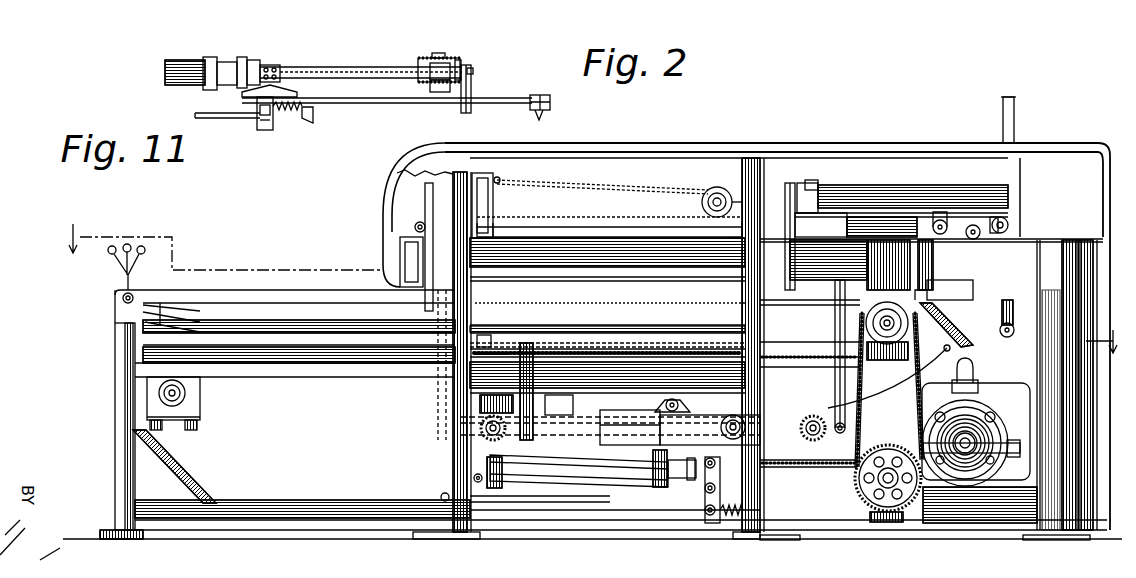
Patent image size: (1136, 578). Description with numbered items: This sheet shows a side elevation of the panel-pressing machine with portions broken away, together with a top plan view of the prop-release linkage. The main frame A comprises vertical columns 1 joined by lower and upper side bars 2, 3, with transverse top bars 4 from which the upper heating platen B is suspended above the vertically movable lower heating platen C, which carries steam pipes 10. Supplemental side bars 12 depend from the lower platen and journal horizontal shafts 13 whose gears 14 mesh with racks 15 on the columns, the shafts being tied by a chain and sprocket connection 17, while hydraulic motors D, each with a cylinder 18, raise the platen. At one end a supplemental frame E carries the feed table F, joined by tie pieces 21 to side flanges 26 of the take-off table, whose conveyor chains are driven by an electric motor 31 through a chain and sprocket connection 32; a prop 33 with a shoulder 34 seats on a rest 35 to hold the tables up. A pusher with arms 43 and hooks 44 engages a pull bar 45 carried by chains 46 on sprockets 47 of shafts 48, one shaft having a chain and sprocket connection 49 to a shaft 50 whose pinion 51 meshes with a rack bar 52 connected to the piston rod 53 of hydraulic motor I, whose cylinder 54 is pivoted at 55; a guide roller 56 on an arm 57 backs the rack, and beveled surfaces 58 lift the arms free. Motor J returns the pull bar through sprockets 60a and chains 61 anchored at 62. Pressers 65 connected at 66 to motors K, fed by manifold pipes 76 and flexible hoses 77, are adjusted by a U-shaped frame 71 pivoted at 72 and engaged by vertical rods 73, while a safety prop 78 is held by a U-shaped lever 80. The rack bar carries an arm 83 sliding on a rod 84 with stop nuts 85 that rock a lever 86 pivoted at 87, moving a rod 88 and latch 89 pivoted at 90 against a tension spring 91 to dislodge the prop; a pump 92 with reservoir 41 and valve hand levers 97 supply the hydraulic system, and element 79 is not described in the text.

In FIG. 2, the vertical side posts or columns 1 is at (445, 540).
In FIG. 11, the lower side bars 2 is at (255, 100).
In FIG. 2, the lower side bars 2 is at (955, 530).
In FIG. 2, the upper side bars 3 is at (589, 288).
In FIG. 2, the transverse top bars 4 is at (473, 192).
In FIG. 2, the steam pipes 10 is at (590, 350).
In FIG. 2, the supplemental side bars 12 is at (600, 430).
In FIG. 2, the horizontal shafts 13 is at (490, 440).
In FIG. 2, the gears 14 is at (480, 436).
In FIG. 2, the racks 15 is at (480, 410).
In FIG. 2, the chain and sprocket connection 17 is at (630, 440).
In FIG. 2, the cylinder 18 is at (555, 450).
In FIG. 2, the tie pieces 21 is at (200, 335).
In FIG. 2, the side flanges 26 is at (285, 362).
In FIG. 2, the electric motor 31 is at (195, 395).
In FIG. 2, the chain and sprocket connection 32 is at (145, 380).
In FIG. 2, the prop 33 is at (478, 478).
In FIG. 2, the shoulder 34 is at (480, 420).
In FIG. 2, the rest 35 is at (470, 428).
In FIG. 2, the reservoir 41 is at (982, 380).
In FIG. 2, the arms 43 is at (360, 326).
In FIG. 2, the hooks 44 is at (500, 322).
In FIG. 2, the pull bar 45 is at (485, 325).
In FIG. 2, the chains 46 is at (640, 350).
In FIG. 2, the sprockets 47 is at (958, 347).
In FIG. 2, the shafts 48 is at (952, 318).
In FIG. 2, the chain and sprocket connection 49 is at (920, 400).
In FIG. 11, the shaft 50 is at (440, 84).
In FIG. 2, the shaft 50 is at (888, 488).
In FIG. 11, the pinion 51 is at (430, 55).
In FIG. 11, the rack bar 52 is at (396, 66).
In FIG. 11, the piston rod 53 is at (262, 66).
In FIG. 2, the piston rod 53 is at (705, 470).
In FIG. 11, the cylinder 54 is at (188, 58).
In FIG. 2, the cylinder 54 is at (525, 470).
In FIG. 2, the pivot 55 is at (470, 490).
In FIG. 11, the guide roller 56 is at (473, 70).
In FIG. 11, the arm 57 is at (458, 60).
In FIG. 2, the arm 57 is at (945, 430).
In FIG. 2, the beveled surfaces 58 is at (525, 350).
In FIG. 2, the sprockets 60a is at (720, 190).
In FIG. 2, the chains 61 is at (612, 200).
In FIG. 2, the connection 62 is at (500, 180).
In FIG. 2, the pressers 65 is at (860, 290).
In FIG. 2, the connection 66 is at (925, 290).
In FIG. 2, the U-shaped frame 71 is at (962, 225).
In FIG. 2, the pivot 72 is at (1015, 207).
In FIG. 2, the vertical rods 73 is at (835, 310).
In FIG. 2, the manifold pipes 76 is at (1003, 258).
In FIG. 2, the flexible hoses 77 is at (1013, 336).
In FIG. 2, the safety prop 78 is at (722, 422).
In FIG. 2, the roller 79 is at (690, 398).
In FIG. 2, the U-shaped lever 80 is at (944, 291).
In FIG. 11, the arm 83 is at (462, 112).
In FIG. 11, the rod 84 is at (497, 98).
In FIG. 11, the adjustable stop nuts 85 is at (541, 112).
In FIG. 11, the lever 86 is at (262, 112).
In FIG. 2, the lever 86 is at (708, 512).
In FIG. 11, the pivot 87 is at (270, 128).
In FIG. 2, the pivot 87 is at (708, 490).
In FIG. 11, the rod 88 is at (195, 116).
In FIG. 2, the rod 88 is at (610, 500).
In FIG. 2, the dog or latch 89 is at (470, 480).
In FIG. 2, the pivot 90 is at (440, 500).
In FIG. 2, the tension spring 91 is at (745, 520).
In FIG. 2, the pump 92 is at (995, 425).
In FIG. 2, the hand lever 97 is at (120, 267).
In FIG. 11, the frame A is at (313, 115).
In FIG. 2, the frame A is at (760, 157).
In FIG. 2, the upper heating platen B is at (695, 270).
In FIG. 2, the lower heating platen C is at (630, 312).
In FIG. 2, the hydraulic motors D is at (552, 312).
In FIG. 2, the supplemental frame E is at (332, 430).
In FIG. 2, the feed table F is at (300, 314).
In FIG. 11, the hydraulic motor I is at (207, 56).
In FIG. 2, the hydraulic motor I is at (540, 465).
In FIG. 2, the single acting hydraulic motor J is at (935, 192).
In FIG. 2, the double acting hydraulic motor K is at (1000, 234).